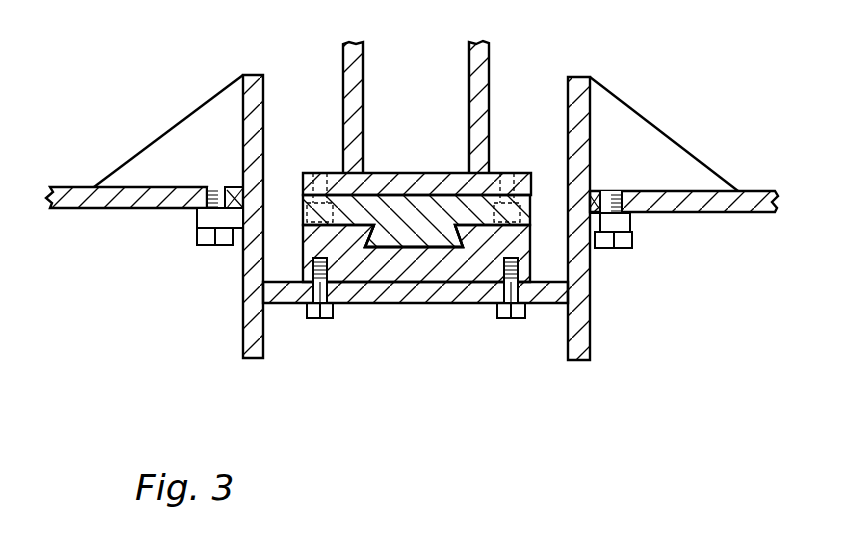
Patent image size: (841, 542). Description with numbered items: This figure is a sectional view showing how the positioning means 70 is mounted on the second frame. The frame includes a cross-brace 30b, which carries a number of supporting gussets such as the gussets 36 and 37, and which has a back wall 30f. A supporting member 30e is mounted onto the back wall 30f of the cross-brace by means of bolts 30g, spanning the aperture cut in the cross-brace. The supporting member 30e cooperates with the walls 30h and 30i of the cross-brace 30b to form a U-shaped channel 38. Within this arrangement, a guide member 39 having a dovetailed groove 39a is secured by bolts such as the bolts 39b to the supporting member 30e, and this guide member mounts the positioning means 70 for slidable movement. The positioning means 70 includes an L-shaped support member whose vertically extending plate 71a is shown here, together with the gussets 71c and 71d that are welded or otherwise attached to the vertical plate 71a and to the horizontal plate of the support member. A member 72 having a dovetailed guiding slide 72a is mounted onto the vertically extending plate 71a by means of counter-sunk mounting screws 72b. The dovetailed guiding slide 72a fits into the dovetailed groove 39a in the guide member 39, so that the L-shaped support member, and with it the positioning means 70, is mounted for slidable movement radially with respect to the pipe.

The wall 30h is at (263, 86).
The wall 30i is at (590, 78).
The back wall 30f is at (100, 210).
The cross-brace 30b is at (742, 191).
The supporting member 30e is at (590, 295).
The bolts 30g is at (200, 238).
The gusset 36 is at (165, 133).
The gusset 37 is at (630, 128).
The U-shaped channel 38 is at (546, 152).
The guide member 39 is at (429, 313).
The dovetailed groove 39a is at (436, 248).
The bolts 39b is at (322, 319).
The positioning means 70 is at (419, 101).
The vertically extending plate 71a is at (410, 173).
The gusset 71c is at (343, 91).
The gusset 71d is at (490, 50).
The member 72 is at (401, 236).
The dovetailed guiding slide 72a is at (470, 235).
The counter-sunk mounting screws 72b is at (320, 172).